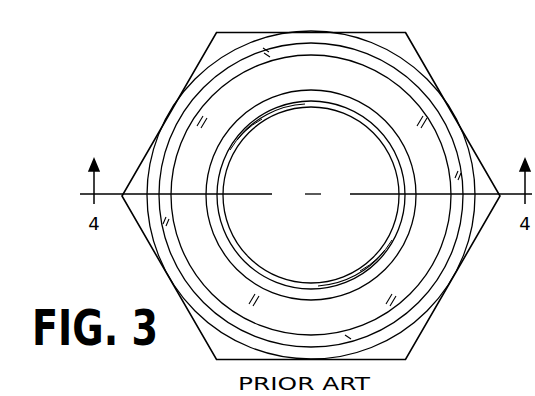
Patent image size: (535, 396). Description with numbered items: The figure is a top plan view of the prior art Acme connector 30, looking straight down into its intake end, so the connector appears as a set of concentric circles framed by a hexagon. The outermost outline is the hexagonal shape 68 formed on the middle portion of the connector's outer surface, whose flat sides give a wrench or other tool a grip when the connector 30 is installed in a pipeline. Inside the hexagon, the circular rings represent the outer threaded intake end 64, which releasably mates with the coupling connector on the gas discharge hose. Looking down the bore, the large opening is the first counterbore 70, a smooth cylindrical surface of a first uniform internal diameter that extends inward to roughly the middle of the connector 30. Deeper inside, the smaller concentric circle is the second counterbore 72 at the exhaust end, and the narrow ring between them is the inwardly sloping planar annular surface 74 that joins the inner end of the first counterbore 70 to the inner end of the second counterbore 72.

The Acme connector 30 is at (447, 70).
The outer threaded intake end 64 is at (415, 332).
The hexagonal shape 68 is at (192, 72).
The first counterbore 70 is at (320, 106).
The second counterbore 72 is at (317, 91).
The inwardly sloping planar annular surface 74 is at (238, 260).